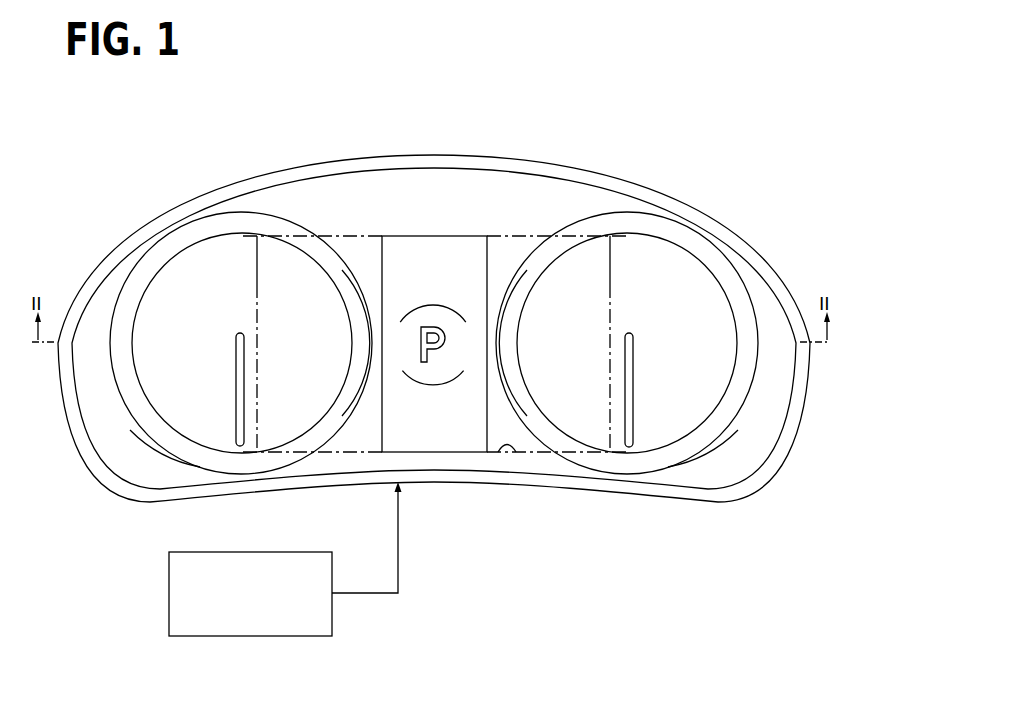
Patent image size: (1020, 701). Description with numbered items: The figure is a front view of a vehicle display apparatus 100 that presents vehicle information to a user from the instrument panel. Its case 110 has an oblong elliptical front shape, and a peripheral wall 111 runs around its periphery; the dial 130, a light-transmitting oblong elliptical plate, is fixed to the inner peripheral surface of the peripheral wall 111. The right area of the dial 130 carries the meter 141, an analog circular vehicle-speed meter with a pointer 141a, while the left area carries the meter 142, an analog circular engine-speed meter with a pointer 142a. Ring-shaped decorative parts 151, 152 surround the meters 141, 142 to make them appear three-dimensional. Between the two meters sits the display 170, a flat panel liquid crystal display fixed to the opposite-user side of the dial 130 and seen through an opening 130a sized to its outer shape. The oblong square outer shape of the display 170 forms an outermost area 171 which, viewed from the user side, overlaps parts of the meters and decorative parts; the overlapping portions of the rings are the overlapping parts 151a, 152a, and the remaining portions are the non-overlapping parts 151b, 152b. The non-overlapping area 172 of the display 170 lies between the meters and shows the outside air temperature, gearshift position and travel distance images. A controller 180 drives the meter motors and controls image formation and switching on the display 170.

The vehicle display apparatus 100 is at (432, 290).
The case 110 is at (95, 262).
The peripheral wall 111 is at (132, 238).
The dial 130 is at (303, 200).
The opening 130a is at (517, 460).
The meter 141 is at (611, 229).
The pointer 141a is at (630, 403).
The meter 142 is at (205, 229).
The pointer 142a is at (238, 403).
The decorative part 151 is at (632, 226).
The overlapping part 151a is at (518, 315).
The non-overlapping part 151b is at (703, 437).
The decorative part 152 is at (233, 220).
The overlapping part 152a is at (355, 318).
The non-overlapping part 152b is at (163, 437).
The display 170 is at (410, 228).
The outermost area 171 is at (514, 236).
The non-overlapping area 172 is at (449, 236).
The controller 180 is at (276, 551).